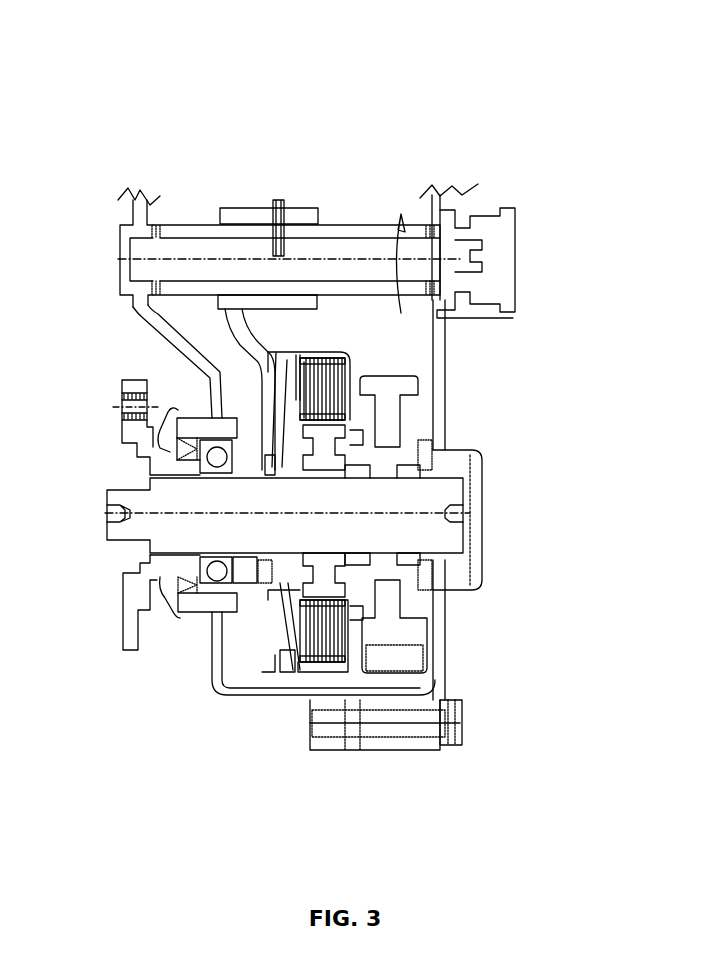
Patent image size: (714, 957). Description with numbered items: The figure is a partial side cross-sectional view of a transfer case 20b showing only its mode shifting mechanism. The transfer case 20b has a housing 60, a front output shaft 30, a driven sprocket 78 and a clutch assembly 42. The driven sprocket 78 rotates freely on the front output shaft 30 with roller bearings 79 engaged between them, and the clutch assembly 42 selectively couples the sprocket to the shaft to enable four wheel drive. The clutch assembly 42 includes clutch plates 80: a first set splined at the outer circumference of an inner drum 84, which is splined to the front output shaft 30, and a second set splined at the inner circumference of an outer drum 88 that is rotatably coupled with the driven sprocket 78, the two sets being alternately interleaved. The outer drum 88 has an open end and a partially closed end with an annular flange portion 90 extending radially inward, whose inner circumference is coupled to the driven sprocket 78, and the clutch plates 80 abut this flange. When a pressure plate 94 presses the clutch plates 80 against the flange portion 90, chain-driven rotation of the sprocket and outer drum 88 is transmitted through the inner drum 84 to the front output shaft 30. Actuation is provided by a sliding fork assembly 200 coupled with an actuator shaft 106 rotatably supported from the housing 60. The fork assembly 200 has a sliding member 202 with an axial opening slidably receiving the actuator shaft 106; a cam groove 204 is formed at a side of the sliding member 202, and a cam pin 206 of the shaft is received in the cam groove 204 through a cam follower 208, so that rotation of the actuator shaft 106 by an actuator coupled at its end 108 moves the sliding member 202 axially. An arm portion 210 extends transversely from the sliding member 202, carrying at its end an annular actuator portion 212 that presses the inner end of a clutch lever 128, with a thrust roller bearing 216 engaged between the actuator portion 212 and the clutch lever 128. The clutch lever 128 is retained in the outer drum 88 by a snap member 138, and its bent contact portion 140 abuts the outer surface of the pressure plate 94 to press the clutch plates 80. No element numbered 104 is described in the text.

The transfer case 20b is at (516, 107).
The sliding fork assembly 200 is at (302, 175).
The sliding member 202 is at (232, 196).
The cam groove 204 is at (262, 200).
The cam pin 206 is at (278, 243).
The cam follower 208 is at (292, 204).
The actuator shaft 106 is at (358, 240).
The hollow shaft 104 is at (136, 266).
The end of the actuator shaft 108 is at (462, 252).
The housing 60 is at (152, 320).
The clutch assembly 42 is at (334, 338).
The arm portion 210 is at (218, 358).
The outer drum 88 is at (310, 358).
The clutch plates 80 is at (330, 385).
The inner drum 84 is at (323, 462).
The roller bearings 79 is at (452, 470).
The thrust roller bearing 216 is at (268, 475).
The front output shaft 30 is at (134, 530).
The clutch lever 128 is at (290, 568).
The annular flange portion 90 is at (354, 572).
The pressure plate 94 is at (298, 658).
The bent contact portion 140 is at (296, 644).
The snap member 138 is at (276, 667).
The actuator portion 212 is at (257, 590).
The driven sprocket 78 is at (415, 632).